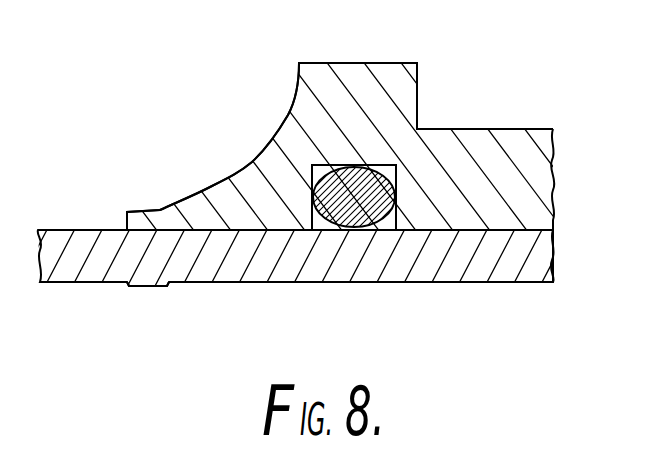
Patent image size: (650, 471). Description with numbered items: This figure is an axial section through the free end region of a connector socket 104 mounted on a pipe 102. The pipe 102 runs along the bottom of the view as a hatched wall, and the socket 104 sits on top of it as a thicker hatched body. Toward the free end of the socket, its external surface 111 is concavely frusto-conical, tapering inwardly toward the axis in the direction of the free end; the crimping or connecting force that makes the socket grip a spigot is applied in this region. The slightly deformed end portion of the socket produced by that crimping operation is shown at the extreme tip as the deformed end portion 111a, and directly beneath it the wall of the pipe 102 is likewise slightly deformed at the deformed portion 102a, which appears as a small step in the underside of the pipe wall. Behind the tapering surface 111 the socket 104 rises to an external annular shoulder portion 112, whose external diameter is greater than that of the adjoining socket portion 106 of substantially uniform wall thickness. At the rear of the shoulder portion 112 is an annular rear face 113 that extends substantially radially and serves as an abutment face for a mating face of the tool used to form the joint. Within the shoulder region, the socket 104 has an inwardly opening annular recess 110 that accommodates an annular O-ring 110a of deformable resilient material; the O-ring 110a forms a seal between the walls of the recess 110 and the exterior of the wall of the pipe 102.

The pipe 102 is at (58, 277).
The deformed portion of the pipe wall 102a is at (145, 288).
The socket 104 is at (428, 173).
The socket portion of substantially uniform wall thickness 106 is at (538, 173).
The inwardly opening annular recess 110 is at (388, 230).
The O-ring 110a is at (347, 222).
The external surface of the socket portion 111 is at (248, 168).
The deformed end portion of the socket 111a is at (135, 221).
The external annular shoulder portion 112 is at (355, 72).
The annular rear face 113 is at (420, 91).